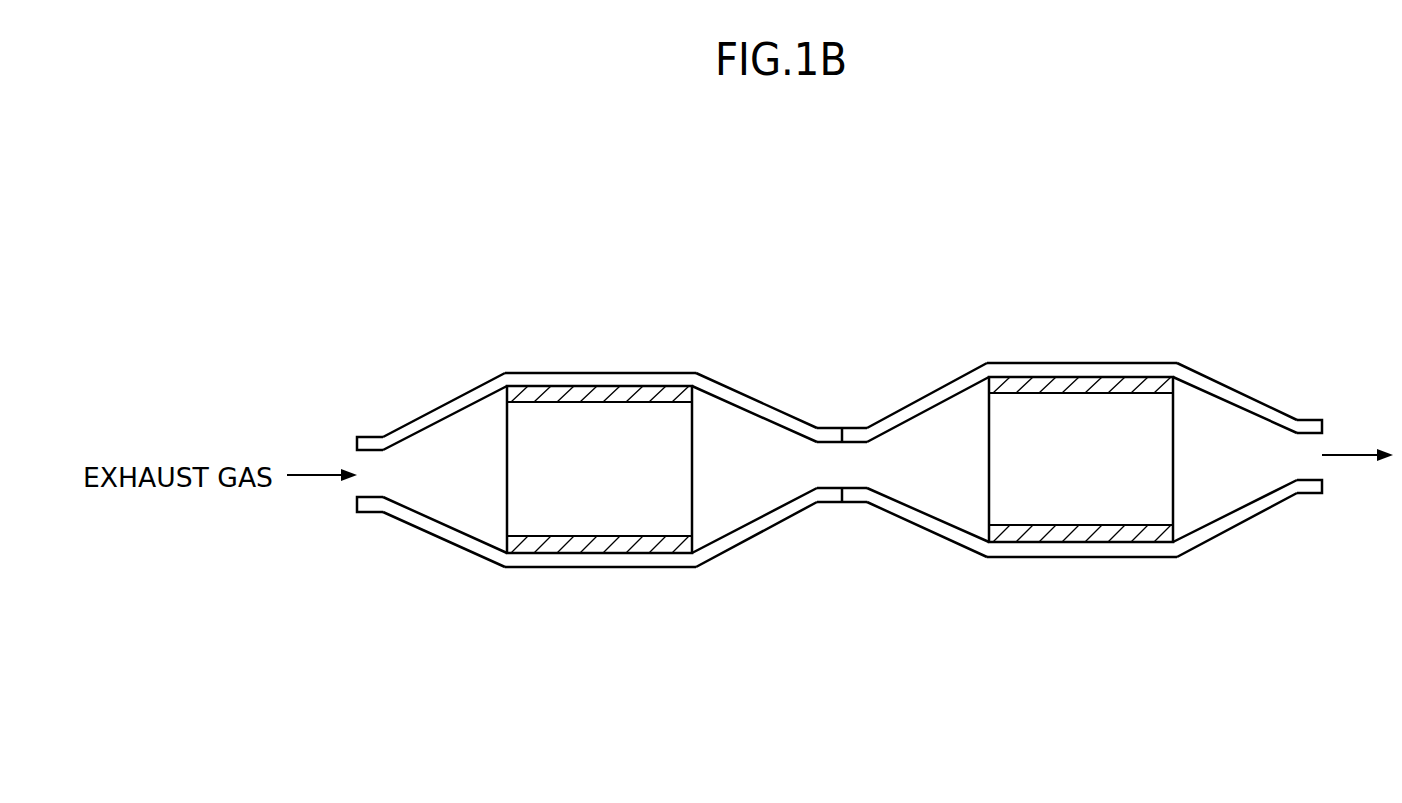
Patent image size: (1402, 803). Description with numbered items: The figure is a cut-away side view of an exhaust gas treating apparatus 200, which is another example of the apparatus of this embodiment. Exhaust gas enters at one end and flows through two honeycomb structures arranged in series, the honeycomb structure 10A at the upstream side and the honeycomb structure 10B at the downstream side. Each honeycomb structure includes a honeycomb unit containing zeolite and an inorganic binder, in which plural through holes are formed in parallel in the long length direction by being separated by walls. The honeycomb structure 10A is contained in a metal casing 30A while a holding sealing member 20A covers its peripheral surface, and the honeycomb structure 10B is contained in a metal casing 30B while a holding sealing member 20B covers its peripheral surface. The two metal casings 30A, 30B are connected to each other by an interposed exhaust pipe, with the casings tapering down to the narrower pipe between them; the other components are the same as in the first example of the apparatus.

The exhaust gas treating apparatus 200 is at (1000, 241).
The honeycomb structure 10A is at (587, 510).
The honeycomb structure 10B is at (1085, 515).
The holding sealing member 20A is at (583, 397).
The holding sealing member 20B is at (1083, 387).
The metal casing 30A is at (730, 390).
The metal casing 30B is at (1212, 378).